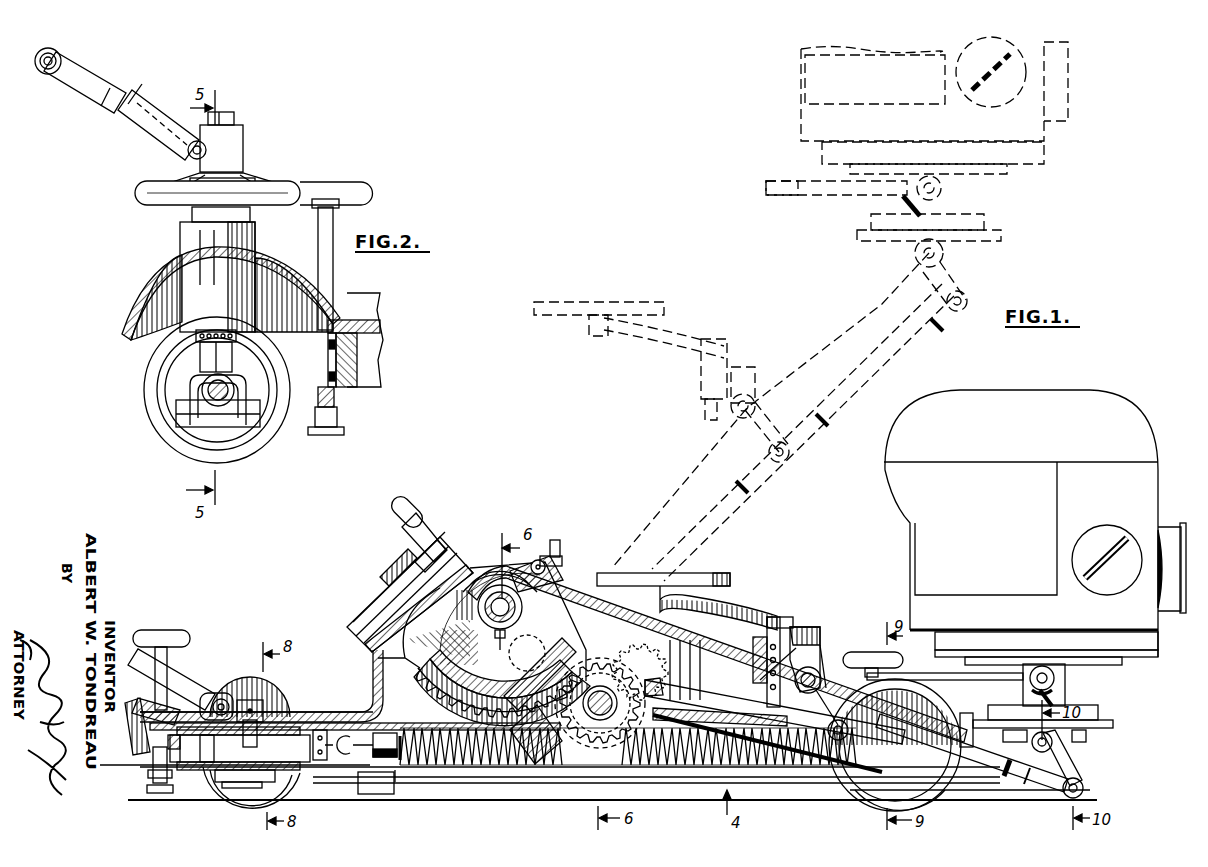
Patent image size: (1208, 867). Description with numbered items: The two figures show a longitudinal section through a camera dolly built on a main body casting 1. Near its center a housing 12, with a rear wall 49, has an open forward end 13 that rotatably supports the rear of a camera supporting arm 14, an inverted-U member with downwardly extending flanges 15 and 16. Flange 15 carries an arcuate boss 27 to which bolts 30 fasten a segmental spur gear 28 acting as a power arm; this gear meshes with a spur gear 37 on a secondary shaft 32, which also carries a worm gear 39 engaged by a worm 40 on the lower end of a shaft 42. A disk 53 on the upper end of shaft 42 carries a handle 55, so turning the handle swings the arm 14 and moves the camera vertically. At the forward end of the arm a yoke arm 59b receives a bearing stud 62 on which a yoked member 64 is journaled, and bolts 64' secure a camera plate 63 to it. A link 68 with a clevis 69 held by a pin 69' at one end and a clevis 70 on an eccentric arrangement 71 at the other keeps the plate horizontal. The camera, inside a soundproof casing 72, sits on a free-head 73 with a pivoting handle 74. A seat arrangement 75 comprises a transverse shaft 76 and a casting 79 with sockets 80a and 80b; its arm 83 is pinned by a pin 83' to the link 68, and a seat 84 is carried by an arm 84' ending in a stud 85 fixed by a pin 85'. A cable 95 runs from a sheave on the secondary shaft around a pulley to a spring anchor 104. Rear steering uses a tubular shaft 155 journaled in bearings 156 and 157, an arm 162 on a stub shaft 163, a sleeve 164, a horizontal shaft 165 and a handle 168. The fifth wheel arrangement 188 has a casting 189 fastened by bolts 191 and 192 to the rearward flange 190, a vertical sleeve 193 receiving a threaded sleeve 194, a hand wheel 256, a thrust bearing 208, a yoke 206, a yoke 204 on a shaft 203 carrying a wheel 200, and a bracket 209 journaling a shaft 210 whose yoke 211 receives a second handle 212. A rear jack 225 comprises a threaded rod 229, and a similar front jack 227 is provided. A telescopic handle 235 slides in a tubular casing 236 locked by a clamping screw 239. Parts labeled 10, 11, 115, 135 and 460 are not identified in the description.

In FIG. 2, the main body casting 1 is at (380, 332).
In FIG. 2, the fifth wheel arrangement 188 is at (302, 151).
In FIG. 2, the casting 189 is at (305, 285).
In FIG. 1, the casting 189 is at (134, 752).
In FIG. 2, the rearward flange 190 is at (360, 362).
In FIG. 1, the rearward flange 190 is at (152, 718).
In FIG. 2, the bolt 191 is at (318, 350).
In FIG. 2, the bolt 192 is at (317, 357).
In FIG. 1, the bolt 192 is at (146, 780).
In FIG. 2, the vertical sleeve 193 is at (250, 248).
In FIG. 2, the second sleeve 194 is at (190, 214).
In FIG. 2, the wheel 200 is at (262, 440).
In FIG. 2, the shaft 203 is at (203, 389).
In FIG. 2, the yoke 204 is at (226, 428).
In FIG. 2, the second yoke 206 is at (178, 395).
In FIG. 2, the thrust bearing 208 is at (222, 338).
In FIG. 2, the bracket 209 is at (238, 156).
In FIG. 2, the horizontal shaft 210 is at (188, 153).
In FIG. 2, the yoke 211 is at (142, 128).
In FIG. 2, the second handle 212 is at (98, 102).
In FIG. 2, the threaded rod 229 is at (334, 278).
In FIG. 2, the hand wheel 256 is at (135, 190).
In FIG. 1, the housing dome 10 is at (283, 690).
In FIG. 1, the wheel 11 is at (930, 705).
In FIG. 1, the housing 12 is at (395, 502).
In FIG. 1, the open forward end 13 is at (480, 566).
In FIG. 1, the camera supporting arm 14 is at (738, 648).
In FIG. 1, the flange 15 is at (177, 748).
In FIG. 1, the flange 16 is at (767, 706).
In FIG. 1, the arcuate boss 27 is at (436, 690).
In FIG. 1, the segmental spur gear 28 is at (452, 714).
In FIG. 1, the bolts 30 is at (420, 676).
In FIG. 1, the secondary shaft 32 is at (610, 692).
In FIG. 1, the spur gear 37 is at (600, 692).
In FIG. 1, the worm gear 39 is at (640, 668).
In FIG. 1, the worm 40 is at (562, 770).
In FIG. 1, the shaft 42 is at (480, 622).
In FIG. 1, the rear wall 49 is at (365, 690).
In FIG. 1, the disk 53 is at (370, 603).
In FIG. 1, the handle 55 is at (425, 532).
In FIG. 1, the yoke arm 59b is at (970, 760).
In FIG. 1, the bearing stud 62 is at (1032, 746).
In FIG. 1, the camera plate 63 is at (1105, 716).
In FIG. 1, the yoked member 64 is at (1072, 758).
In FIG. 1, the bolts 64' is at (1100, 739).
In FIG. 1, the link 68 is at (735, 697).
In FIG. 1, the clevis 69 is at (520, 650).
In FIG. 1, the pin 69' is at (540, 674).
In FIG. 1, the clevis 70 is at (1050, 790).
In FIG. 1, the eccentric arrangement 71 is at (1084, 786).
In FIG. 1, the soundproof casing 72 is at (1152, 502).
In FIG. 1, the camera free-head 73 is at (1065, 684).
In FIG. 1, the handle 74 is at (895, 674).
In FIG. 1, the seat arrangement 75 is at (813, 626).
In FIG. 1, the transverse horizontal shaft 76 is at (822, 680).
In FIG. 1, the casting 79 is at (832, 657).
In FIG. 1, the vertical socket 80a is at (792, 651).
In FIG. 1, the vertical socket 80b is at (815, 660).
In FIG. 1, the arm 83 is at (846, 722).
In FIG. 1, the pin 83' is at (821, 773).
In FIG. 1, the seat 84 is at (663, 567).
In FIG. 1, the arm 84' is at (719, 608).
In FIG. 1, the stud 85 is at (747, 660).
In FIG. 1, the pin 85' is at (790, 650).
In FIG. 1, the cable 95 is at (347, 690).
In FIG. 1, the spring anchor 104 is at (390, 795).
In FIG. 1, the spring seat 115 is at (474, 770).
In FIG. 1, the wheel rim 135 is at (868, 795).
In FIG. 1, the tubular shaft 155 is at (216, 748).
In FIG. 1, the bearing 156 is at (225, 784).
In FIG. 1, the bearing 157 is at (300, 720).
In FIG. 1, the arm 162 is at (243, 800).
In FIG. 1, the stub shaft 163 is at (258, 748).
In FIG. 1, the sleeve 164 is at (250, 700).
In FIG. 1, the horizontal shaft 165 is at (218, 700).
In FIG. 1, the handle 168 is at (160, 675).
In FIG. 1, the rear jack 225 is at (172, 655).
In FIG. 1, the front jack 227 is at (865, 652).
In FIG. 1, the telescopic handle 235 is at (538, 560).
In FIG. 1, the tubular casing 236 is at (563, 564).
In FIG. 1, the clamping screw member 239 is at (562, 549).
In FIG. 1, the wheel 460 is at (222, 795).